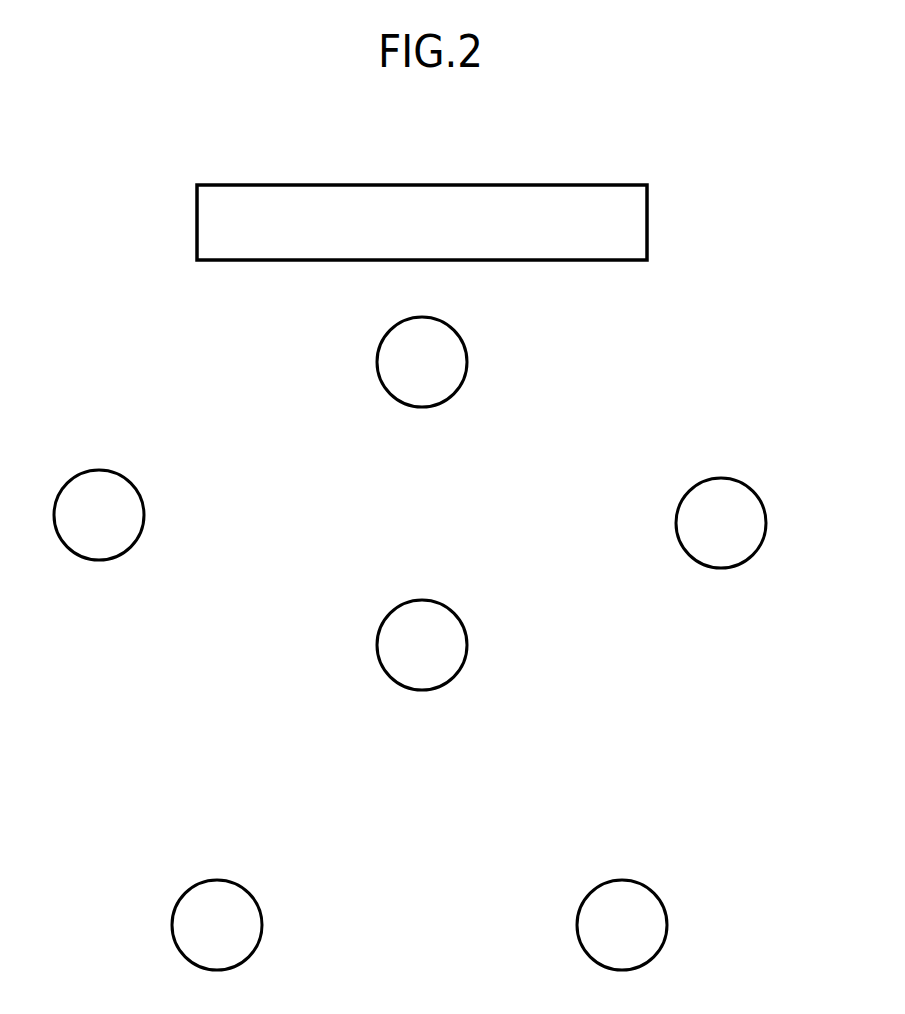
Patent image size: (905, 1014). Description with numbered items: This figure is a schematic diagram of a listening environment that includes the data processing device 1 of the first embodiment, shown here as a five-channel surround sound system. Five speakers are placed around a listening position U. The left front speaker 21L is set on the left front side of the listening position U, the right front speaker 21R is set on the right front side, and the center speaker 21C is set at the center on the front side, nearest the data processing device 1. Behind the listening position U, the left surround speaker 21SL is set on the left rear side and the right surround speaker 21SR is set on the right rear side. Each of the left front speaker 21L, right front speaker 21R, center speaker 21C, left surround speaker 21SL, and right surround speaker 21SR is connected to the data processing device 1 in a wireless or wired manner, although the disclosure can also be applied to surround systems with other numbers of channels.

The data processing device 1 is at (647, 221).
The center speaker 21C is at (408, 407).
The left front speaker 21L is at (128, 480).
The right front speaker 21R is at (738, 480).
The listening position U is at (448, 603).
The left surround speaker 21SL is at (270, 862).
The right surround speaker 21SR is at (675, 862).